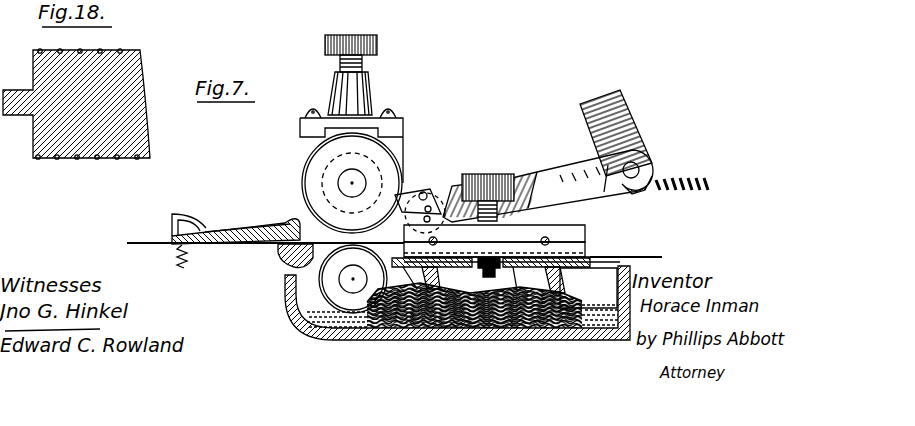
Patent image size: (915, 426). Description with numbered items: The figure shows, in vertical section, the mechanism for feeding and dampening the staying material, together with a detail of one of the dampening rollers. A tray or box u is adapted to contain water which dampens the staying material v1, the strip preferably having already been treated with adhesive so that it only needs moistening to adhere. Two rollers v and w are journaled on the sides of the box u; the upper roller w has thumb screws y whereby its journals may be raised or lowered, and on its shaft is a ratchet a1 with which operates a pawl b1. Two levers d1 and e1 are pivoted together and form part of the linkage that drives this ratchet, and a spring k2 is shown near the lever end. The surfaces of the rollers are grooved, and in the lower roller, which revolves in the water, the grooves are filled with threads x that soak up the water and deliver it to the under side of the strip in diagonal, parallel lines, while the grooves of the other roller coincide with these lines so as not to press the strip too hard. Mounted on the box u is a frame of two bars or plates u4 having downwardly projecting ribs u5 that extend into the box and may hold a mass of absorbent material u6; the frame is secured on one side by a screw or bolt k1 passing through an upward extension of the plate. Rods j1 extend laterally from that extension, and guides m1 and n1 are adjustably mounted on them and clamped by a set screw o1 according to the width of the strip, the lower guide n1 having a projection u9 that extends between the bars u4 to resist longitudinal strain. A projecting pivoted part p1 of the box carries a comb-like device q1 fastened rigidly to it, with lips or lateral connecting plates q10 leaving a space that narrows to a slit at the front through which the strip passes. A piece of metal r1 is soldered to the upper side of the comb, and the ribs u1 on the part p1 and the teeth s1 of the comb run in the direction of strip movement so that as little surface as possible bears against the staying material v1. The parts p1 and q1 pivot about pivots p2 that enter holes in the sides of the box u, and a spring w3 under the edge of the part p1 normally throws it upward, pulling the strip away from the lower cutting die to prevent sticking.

In FIG. 18, the upper roller w is at (76, 104).
In FIG. 7, the upper roller w is at (352, 183).
In FIG. 18, the threads x is at (124, 50).
In FIG. 7, the thumb screws y is at (378, 42).
In FIG. 7, the ratchet a1 is at (378, 160).
In FIG. 7, the pawl b1 is at (399, 193).
In FIG. 7, the lever d1 is at (403, 198).
In FIG. 7, the lever e1 is at (548, 186).
In FIG. 7, the screw or bolt k1 is at (616, 133).
In FIG. 7, the spring k2 is at (682, 166).
In FIG. 7, the set screw o1 is at (502, 176).
In FIG. 7, the upper guide m1 is at (494, 233).
In FIG. 7, the lower guide n1 is at (494, 251).
In FIG. 7, the rods j1 is at (547, 238).
In FIG. 7, the staying material v1 is at (638, 256).
In FIG. 7, the comb-like device q1 is at (226, 235).
In FIG. 7, the lips or lateral connecting plates q10 is at (270, 234).
In FIG. 7, the piece of metal r1 is at (170, 213).
In FIG. 7, the teeth s1 is at (172, 238).
In FIG. 7, the spring w3 is at (183, 267).
In FIG. 7, the projecting pivoted part p1 is at (232, 247).
In FIG. 7, the ribs u1 is at (282, 248).
In FIG. 7, the pivots p2 is at (293, 277).
In FIG. 7, the lower roller v is at (353, 278).
In FIG. 7, the tray or box u is at (413, 358).
In FIG. 7, the downwardly projecting ribs u5 is at (504, 283).
In FIG. 7, the bars or plates u4 is at (380, 341).
In FIG. 7, the absorbent material u6 is at (430, 352).
In FIG. 7, the projection u9 is at (470, 341).